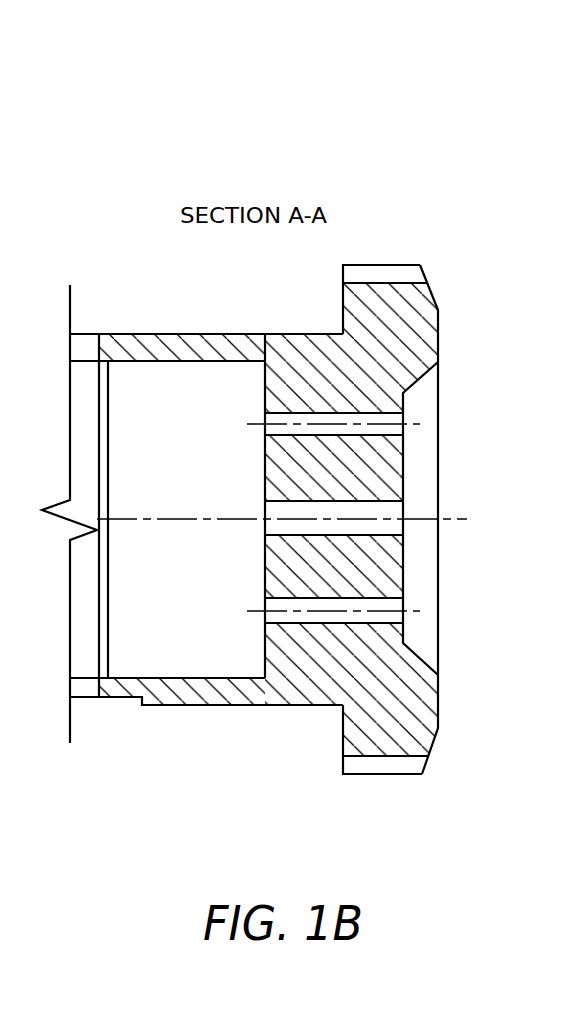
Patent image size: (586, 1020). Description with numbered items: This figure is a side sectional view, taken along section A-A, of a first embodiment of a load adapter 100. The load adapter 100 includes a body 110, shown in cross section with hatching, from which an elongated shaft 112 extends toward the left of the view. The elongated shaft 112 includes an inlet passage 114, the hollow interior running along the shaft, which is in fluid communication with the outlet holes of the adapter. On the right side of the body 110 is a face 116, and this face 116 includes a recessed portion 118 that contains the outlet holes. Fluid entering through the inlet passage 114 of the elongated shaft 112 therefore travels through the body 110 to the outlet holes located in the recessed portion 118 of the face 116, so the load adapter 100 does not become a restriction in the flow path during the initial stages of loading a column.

The load adapter 100 is at (248, 172).
The body 110 is at (418, 263).
The elongated shaft 112 is at (135, 332).
The inlet passage 114 is at (162, 677).
The face 116 is at (442, 343).
The recessed portion 118 is at (425, 468).